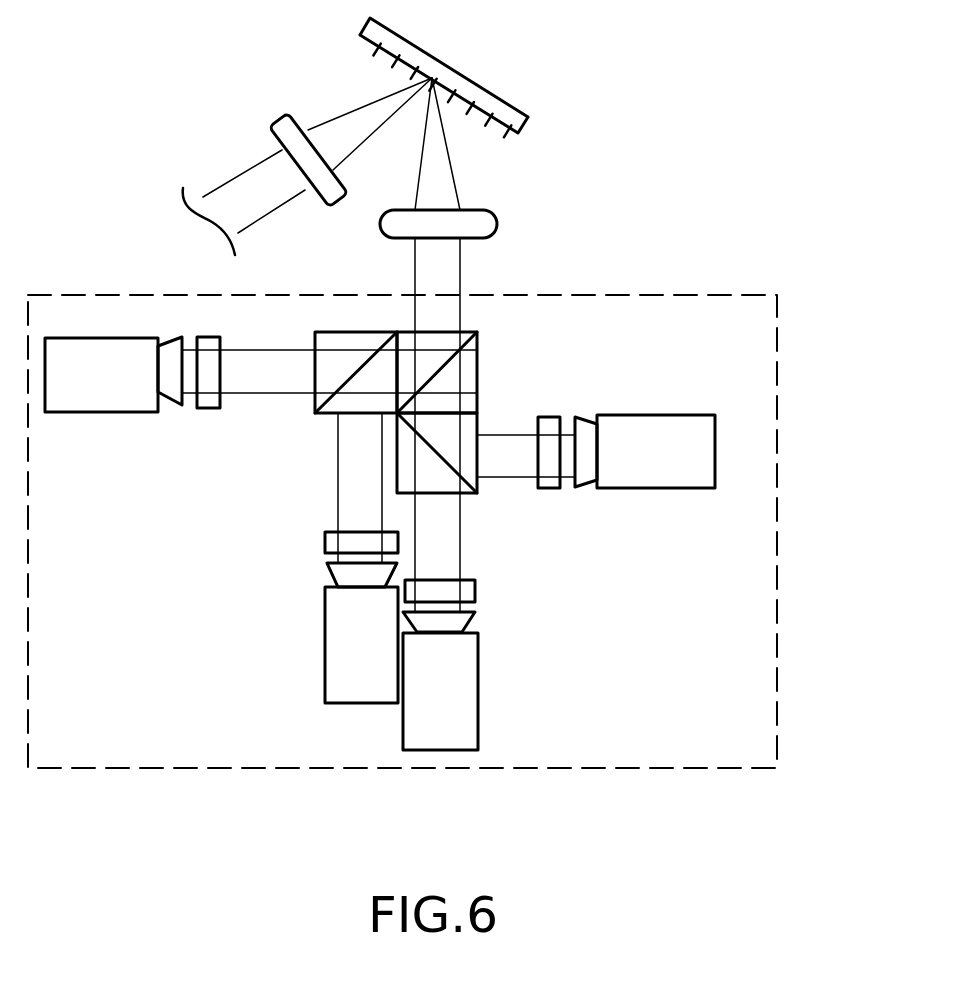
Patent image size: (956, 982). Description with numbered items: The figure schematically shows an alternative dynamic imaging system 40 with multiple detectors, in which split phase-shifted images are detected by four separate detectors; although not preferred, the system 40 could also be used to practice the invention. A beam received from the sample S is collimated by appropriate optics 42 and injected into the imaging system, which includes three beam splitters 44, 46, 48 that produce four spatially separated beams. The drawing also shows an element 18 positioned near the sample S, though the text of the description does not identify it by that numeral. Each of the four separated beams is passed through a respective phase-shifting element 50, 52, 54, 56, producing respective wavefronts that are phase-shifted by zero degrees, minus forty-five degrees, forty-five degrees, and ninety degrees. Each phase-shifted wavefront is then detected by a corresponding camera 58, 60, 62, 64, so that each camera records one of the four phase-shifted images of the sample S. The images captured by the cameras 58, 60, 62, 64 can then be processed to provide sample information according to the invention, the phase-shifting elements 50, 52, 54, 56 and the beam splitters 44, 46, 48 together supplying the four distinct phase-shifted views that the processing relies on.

The sample S is at (528, 118).
The illumination lens 18 is at (280, 115).
The optics 42 is at (487, 222).
The dynamic imaging system 40 is at (627, 752).
The beam splitter 44 is at (323, 343).
The beam splitter 46 is at (478, 368).
The beam splitter 48 is at (477, 497).
The phase-shifting element 50 is at (202, 408).
The phase-shifting element 52 is at (547, 415).
The phase-shifting element 54 is at (475, 590).
The phase-shifting element 56 is at (330, 545).
The camera 58 is at (143, 402).
The camera 60 is at (660, 477).
The camera 62 is at (462, 657).
The camera 64 is at (338, 643).